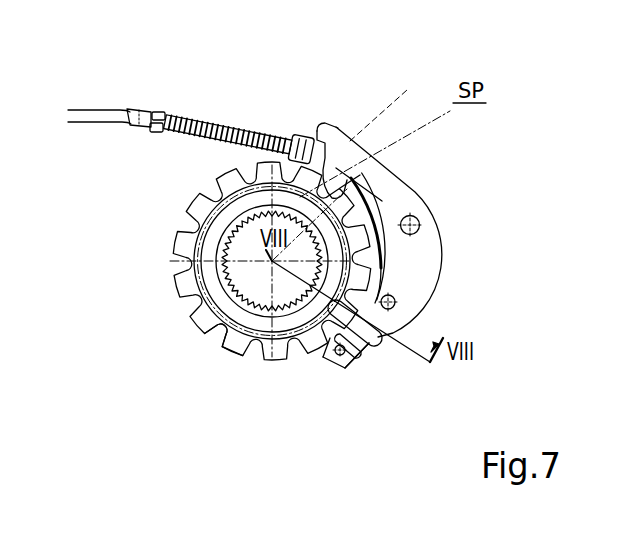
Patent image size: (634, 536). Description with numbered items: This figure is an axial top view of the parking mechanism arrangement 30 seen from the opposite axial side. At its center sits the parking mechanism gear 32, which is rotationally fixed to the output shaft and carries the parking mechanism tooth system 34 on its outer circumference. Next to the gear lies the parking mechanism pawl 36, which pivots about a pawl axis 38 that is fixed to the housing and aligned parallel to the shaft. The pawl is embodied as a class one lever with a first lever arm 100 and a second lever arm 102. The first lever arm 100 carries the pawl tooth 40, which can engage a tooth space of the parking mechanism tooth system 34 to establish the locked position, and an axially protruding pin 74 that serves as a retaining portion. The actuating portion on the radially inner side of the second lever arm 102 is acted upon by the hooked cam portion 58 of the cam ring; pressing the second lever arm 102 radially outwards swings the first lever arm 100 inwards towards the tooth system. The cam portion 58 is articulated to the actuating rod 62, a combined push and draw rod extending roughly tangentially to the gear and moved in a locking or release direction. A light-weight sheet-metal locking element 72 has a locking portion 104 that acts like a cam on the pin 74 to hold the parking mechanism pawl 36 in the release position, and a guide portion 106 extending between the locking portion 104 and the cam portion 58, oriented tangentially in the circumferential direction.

The parking mechanism arrangement 30 is at (492, 72).
The parking mechanism gear 32 is at (190, 295).
The parking mechanism tooth system 34 is at (225, 341).
The parking mechanism pawl 36 is at (422, 188).
The pawl axis 38 is at (420, 222).
The pawl tooth 40 is at (298, 342).
The cam portion 58 is at (299, 131).
The actuating rod 62 is at (112, 113).
The locking element 72 is at (352, 368).
The pin 74 is at (396, 303).
The first lever arm 100 is at (404, 276).
The second lever arm 102 is at (382, 201).
The locking portion 104 is at (357, 353).
The guide portion 106 is at (340, 185).